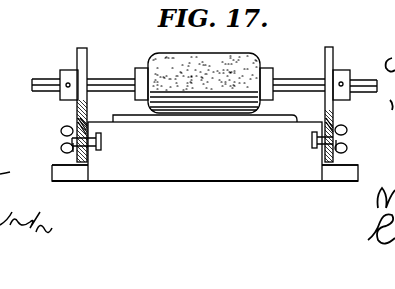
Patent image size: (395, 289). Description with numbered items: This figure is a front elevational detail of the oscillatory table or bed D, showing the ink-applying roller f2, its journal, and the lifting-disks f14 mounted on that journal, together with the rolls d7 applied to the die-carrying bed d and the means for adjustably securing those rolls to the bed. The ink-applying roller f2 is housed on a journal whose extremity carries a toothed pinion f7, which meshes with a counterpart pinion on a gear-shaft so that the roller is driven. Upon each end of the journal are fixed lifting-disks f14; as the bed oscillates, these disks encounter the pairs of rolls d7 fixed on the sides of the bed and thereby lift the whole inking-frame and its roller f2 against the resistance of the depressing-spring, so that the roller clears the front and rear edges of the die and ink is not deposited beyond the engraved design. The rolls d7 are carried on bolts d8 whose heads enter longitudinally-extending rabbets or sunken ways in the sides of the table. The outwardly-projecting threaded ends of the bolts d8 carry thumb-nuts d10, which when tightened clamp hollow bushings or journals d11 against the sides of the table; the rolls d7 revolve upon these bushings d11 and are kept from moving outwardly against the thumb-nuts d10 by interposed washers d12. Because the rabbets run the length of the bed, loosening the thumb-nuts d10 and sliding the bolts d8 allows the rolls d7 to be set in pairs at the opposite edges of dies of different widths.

The oscillatory table or bed D is at (203, 172).
The die-carrying bed d is at (201, 117).
The rolls d7 is at (330, 165).
The bolts d8 is at (101, 142).
The thumb-nuts d10 is at (355, 138).
The hollow bushings or journals d11 is at (350, 118).
The washers d12 is at (360, 155).
The ink-applying roller f2 is at (245, 65).
The toothed pinion f7 is at (110, 88).
The lifting-disks f14 is at (345, 43).